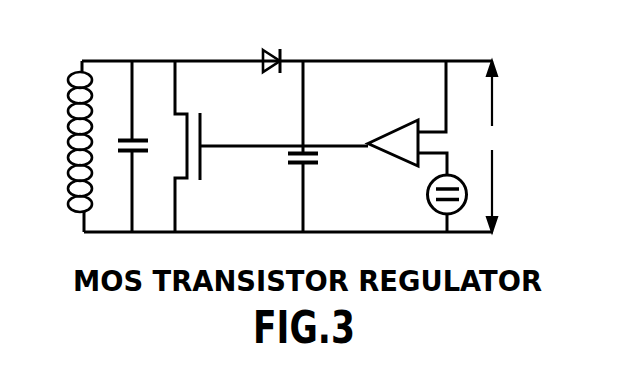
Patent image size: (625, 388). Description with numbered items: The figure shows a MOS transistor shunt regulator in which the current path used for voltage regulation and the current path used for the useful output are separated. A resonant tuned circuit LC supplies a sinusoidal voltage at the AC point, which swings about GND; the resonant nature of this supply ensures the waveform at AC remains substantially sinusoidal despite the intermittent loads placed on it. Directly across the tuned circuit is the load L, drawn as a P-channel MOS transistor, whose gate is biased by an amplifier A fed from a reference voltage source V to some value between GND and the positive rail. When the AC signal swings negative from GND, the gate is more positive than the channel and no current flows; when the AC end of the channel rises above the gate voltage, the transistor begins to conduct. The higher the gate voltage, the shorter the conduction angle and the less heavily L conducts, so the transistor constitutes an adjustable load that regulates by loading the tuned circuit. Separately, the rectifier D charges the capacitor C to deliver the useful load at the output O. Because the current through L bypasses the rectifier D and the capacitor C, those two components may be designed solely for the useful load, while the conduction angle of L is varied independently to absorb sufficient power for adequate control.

The AC signal point AC is at (130, 122).
The tuned circuit LC is at (121, 146).
The load transistor L is at (271, 146).
The rectifier D is at (270, 75).
The capacitor C is at (300, 146).
The amplifier A is at (407, 118).
The reference voltage source V is at (455, 203).
The useful output O is at (492, 146).
The ground GND is at (485, 249).